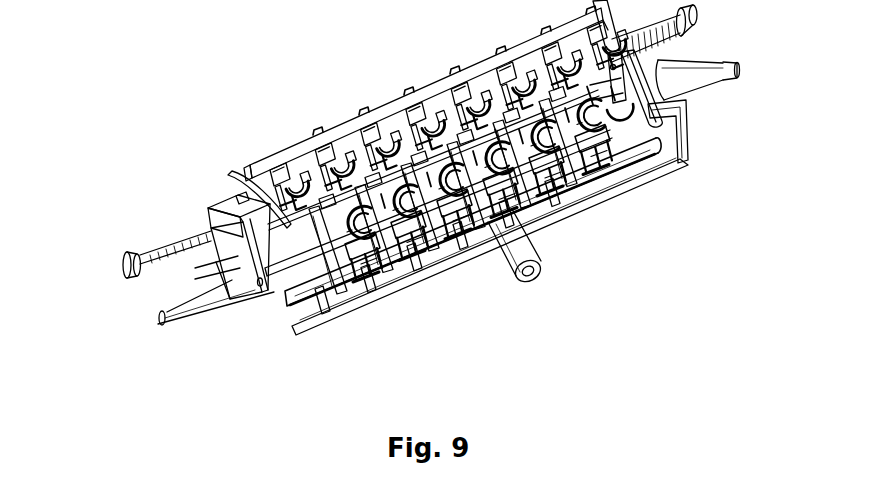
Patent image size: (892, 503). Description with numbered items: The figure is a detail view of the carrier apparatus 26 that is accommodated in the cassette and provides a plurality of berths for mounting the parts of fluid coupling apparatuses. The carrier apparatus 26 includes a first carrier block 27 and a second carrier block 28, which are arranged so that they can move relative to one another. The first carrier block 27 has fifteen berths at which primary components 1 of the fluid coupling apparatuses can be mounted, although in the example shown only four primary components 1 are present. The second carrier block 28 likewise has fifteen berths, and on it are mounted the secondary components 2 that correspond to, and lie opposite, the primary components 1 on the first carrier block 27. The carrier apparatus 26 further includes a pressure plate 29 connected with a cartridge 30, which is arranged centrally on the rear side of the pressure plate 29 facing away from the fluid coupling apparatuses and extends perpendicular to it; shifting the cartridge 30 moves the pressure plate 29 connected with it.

The primary components 1 is at (290, 168).
The secondary components 2 is at (272, 162).
The carrier apparatus 26 is at (672, 216).
The first carrier block 27 is at (350, 122).
The second carrier block 28 is at (223, 207).
The pressure plate 29 is at (400, 268).
The cartridge 30 is at (543, 278).